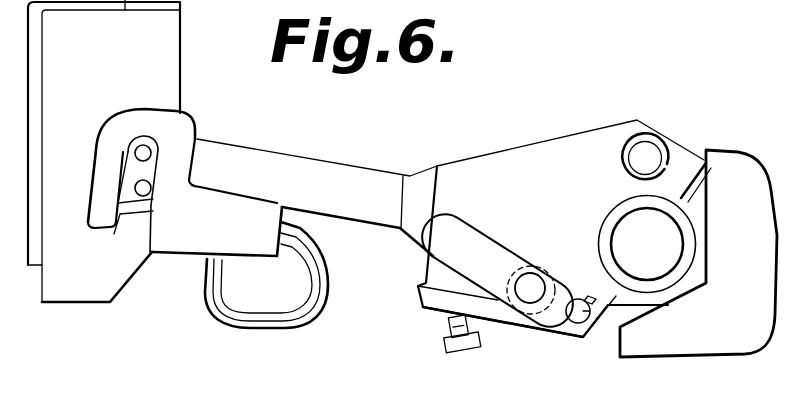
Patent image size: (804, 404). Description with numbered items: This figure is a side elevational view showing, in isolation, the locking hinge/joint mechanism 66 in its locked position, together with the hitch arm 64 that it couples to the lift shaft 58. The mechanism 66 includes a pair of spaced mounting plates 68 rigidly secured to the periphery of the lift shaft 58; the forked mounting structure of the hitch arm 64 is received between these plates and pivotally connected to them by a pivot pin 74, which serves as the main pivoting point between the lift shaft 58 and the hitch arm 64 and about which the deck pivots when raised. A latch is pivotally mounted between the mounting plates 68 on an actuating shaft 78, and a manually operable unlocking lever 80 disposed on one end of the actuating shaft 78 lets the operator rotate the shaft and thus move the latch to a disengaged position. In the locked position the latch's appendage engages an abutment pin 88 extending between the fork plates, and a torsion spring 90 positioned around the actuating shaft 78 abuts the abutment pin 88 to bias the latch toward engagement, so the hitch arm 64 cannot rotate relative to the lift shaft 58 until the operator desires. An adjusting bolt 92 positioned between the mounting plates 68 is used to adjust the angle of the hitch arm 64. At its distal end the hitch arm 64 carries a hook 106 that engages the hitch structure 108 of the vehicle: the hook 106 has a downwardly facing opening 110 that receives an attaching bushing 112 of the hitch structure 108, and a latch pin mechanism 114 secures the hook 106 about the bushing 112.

The lift shaft 58 is at (609, 214).
The hitch arm 64 is at (305, 164).
The locking hinge/joint mechanism 66 is at (552, 130).
The mounting plate 68 is at (592, 171).
The pivot pin 74 is at (648, 150).
The actuating shaft 78 is at (528, 300).
The unlocking lever 80 is at (475, 237).
The abutment pin 88 is at (568, 327).
The torsion spring 90 is at (556, 284).
The adjusting bolt 92 is at (453, 354).
The hook 106 is at (195, 126).
The hitch structure 108 is at (183, 36).
The downwardly facing opening 110 is at (134, 157).
The attaching bushing 112 is at (142, 196).
The latch pin mechanism 114 is at (303, 322).